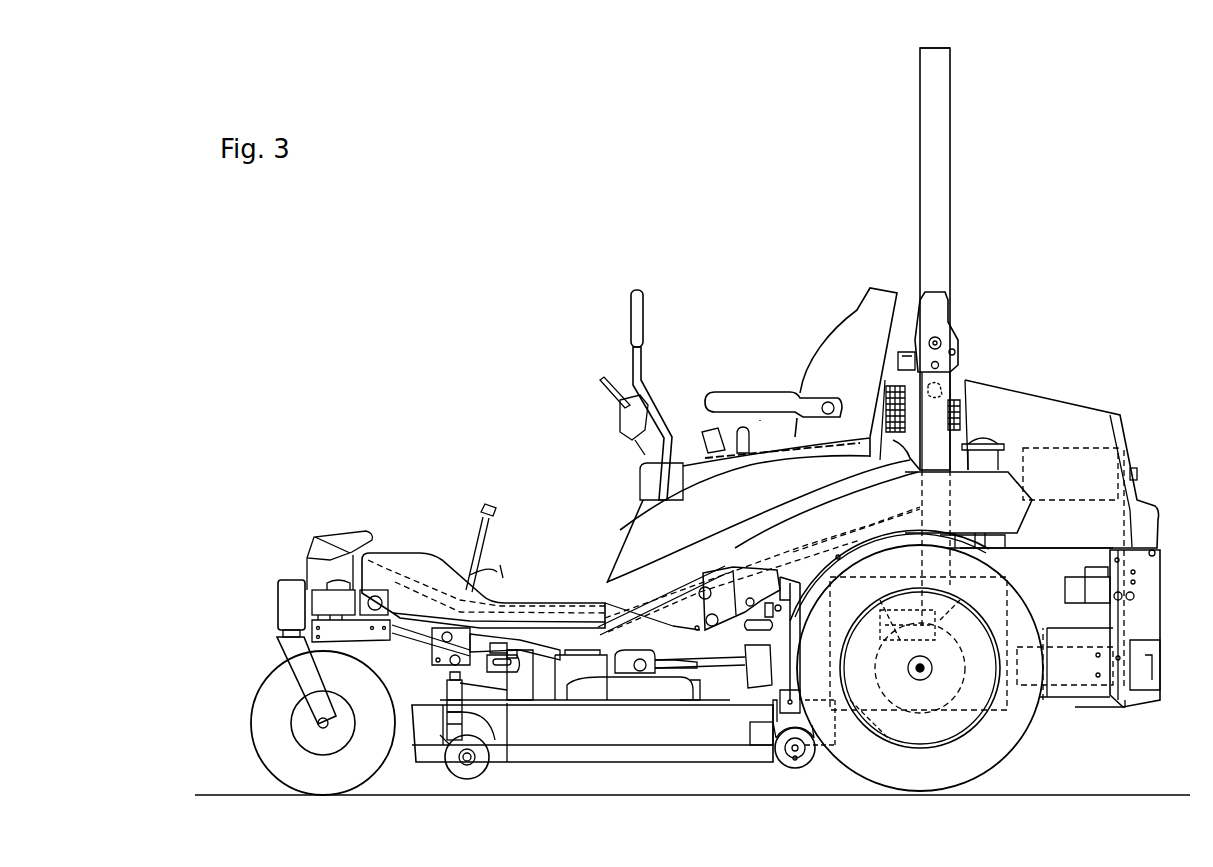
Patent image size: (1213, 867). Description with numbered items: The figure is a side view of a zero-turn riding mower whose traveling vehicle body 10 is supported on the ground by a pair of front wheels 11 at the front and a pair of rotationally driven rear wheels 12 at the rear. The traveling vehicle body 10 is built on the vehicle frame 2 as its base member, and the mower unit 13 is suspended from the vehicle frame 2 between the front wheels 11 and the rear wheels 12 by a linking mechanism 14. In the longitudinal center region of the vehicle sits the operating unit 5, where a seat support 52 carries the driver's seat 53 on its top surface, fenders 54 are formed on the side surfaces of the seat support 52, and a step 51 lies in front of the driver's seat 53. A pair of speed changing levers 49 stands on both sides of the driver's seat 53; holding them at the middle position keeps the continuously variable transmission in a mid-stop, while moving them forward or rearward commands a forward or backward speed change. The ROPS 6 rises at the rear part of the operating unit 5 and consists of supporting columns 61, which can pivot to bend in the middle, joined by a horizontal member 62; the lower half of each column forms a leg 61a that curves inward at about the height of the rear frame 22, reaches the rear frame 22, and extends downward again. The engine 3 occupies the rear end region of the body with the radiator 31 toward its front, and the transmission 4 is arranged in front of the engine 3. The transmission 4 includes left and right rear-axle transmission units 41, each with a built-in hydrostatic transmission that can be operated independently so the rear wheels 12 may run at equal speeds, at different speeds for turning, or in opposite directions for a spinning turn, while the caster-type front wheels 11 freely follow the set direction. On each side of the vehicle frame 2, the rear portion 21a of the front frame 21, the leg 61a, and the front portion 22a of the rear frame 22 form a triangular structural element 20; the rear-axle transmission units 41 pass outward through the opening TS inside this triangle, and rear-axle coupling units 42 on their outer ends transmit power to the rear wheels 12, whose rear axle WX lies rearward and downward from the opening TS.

The vehicle frame 2 is at (1068, 705).
The engine 3 is at (1133, 523).
The transmission 4 is at (880, 740).
The operating unit 5 is at (728, 290).
The ROPS 6 is at (934, 339).
The traveling vehicle body 10 is at (405, 550).
The front wheels 11 is at (258, 727).
The rear wheels 12 is at (1012, 758).
The mower unit 13 is at (600, 762).
The linking mechanism 14 is at (445, 630).
The triangular structural element 20 is at (728, 665).
The front frame 21 is at (590, 640).
The rear portion of the front frame 21a is at (718, 582).
The rear frame 22 is at (1050, 635).
The front portion of the rear frame 22a is at (835, 740).
The radiator 31 is at (980, 440).
The rear-axle transmission unit 41 is at (790, 605).
The rear-axle coupling unit 42 is at (922, 740).
The speed changing lever 49 is at (632, 318).
The step 51 is at (540, 603).
The seat support 52 is at (632, 530).
The driver's seat 53 is at (795, 350).
The fender 54 is at (838, 478).
The supporting column 61 is at (942, 265).
The leg 61a is at (940, 510).
The horizontal member 62 is at (925, 58).
The opening TS is at (778, 608).
The rear axle WX is at (928, 672).